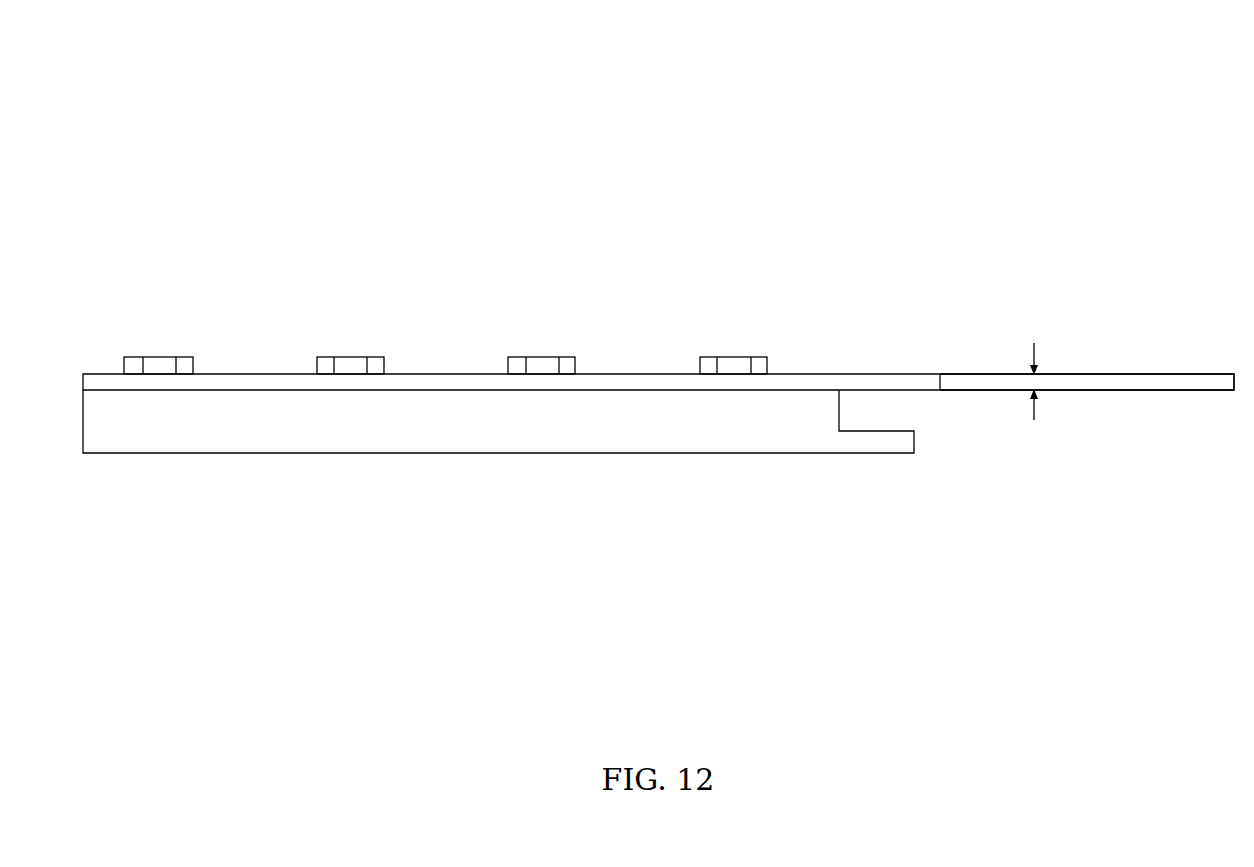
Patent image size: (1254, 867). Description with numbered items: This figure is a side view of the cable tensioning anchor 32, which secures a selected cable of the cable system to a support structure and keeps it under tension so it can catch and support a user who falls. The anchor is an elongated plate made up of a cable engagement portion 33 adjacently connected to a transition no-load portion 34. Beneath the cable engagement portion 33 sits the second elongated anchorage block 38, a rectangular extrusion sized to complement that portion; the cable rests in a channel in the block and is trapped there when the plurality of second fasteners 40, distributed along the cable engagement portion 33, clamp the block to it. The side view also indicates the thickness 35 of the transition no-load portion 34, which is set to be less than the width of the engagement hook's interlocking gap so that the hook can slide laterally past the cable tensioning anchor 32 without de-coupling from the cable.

The cable tensioning anchor 32 is at (1018, 90).
The cable engagement portion 33 is at (872, 380).
The transition no-load portion 34 is at (1134, 378).
The thickness 35 is at (1034, 348).
The second elongated anchorage block 38 is at (526, 431).
The plurality of second fasteners 40 is at (162, 362).